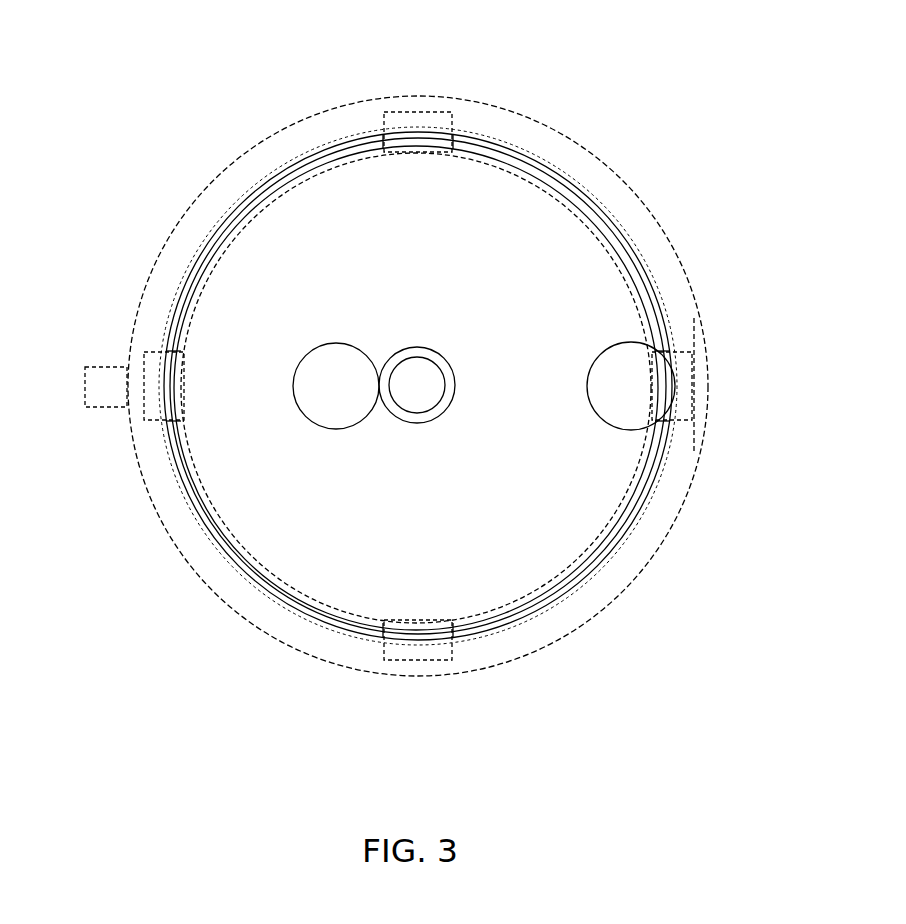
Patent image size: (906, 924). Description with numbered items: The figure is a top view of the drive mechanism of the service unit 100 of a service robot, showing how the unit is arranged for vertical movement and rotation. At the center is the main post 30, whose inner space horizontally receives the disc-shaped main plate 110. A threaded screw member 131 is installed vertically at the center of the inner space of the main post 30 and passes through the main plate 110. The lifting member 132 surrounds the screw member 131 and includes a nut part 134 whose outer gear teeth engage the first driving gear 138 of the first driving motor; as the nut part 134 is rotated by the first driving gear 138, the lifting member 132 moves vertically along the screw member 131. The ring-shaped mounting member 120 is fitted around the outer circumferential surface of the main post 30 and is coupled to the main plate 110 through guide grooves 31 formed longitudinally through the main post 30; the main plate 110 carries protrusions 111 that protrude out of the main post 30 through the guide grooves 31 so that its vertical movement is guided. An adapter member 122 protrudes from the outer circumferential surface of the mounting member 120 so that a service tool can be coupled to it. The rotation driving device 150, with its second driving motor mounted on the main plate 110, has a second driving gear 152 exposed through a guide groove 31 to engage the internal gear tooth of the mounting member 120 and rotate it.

The service unit 100 is at (120, 32).
The main plate 110 is at (327, 207).
The protrusion 111 is at (414, 130).
The mounting member 120 is at (208, 222).
The adapter member 122 is at (85, 388).
The main post 30 is at (620, 246).
The guide groove 31 is at (444, 138).
The screw member 131 is at (432, 410).
The lifting member 132 is at (338, 562).
The nut part 134 is at (403, 414).
The first driving gear 138 is at (326, 412).
The rotation driving device 150 is at (697, 382).
The second driving gear 152 is at (647, 377).